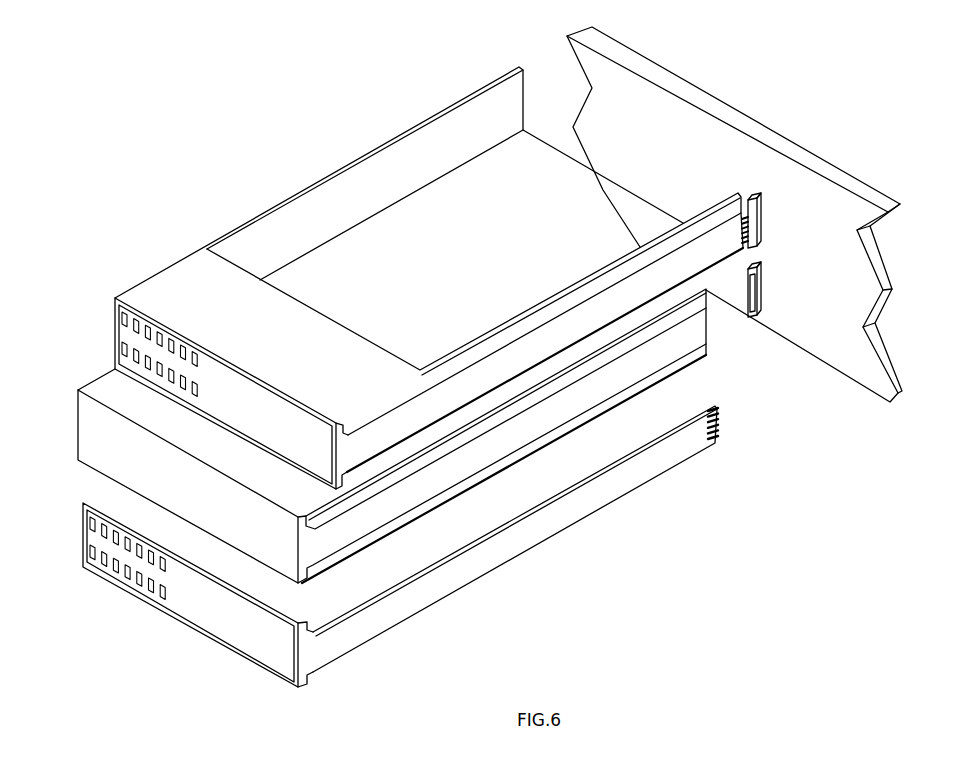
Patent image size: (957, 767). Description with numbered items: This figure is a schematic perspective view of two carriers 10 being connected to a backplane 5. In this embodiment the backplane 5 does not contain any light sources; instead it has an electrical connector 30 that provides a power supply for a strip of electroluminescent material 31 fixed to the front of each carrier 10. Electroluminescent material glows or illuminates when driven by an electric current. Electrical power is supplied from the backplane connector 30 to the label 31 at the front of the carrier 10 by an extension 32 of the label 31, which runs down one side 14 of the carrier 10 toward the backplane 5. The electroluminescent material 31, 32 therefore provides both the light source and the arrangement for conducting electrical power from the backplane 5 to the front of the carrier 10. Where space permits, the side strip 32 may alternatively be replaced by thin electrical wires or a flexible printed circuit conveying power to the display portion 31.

The backplane 5 is at (747, 110).
The carrier 10 is at (313, 184).
The side of the carrier 14 is at (532, 302).
The electrical connector 30 is at (766, 195).
The strip of electroluminescent material 31 is at (116, 305).
The extension of the label 32 is at (597, 313).